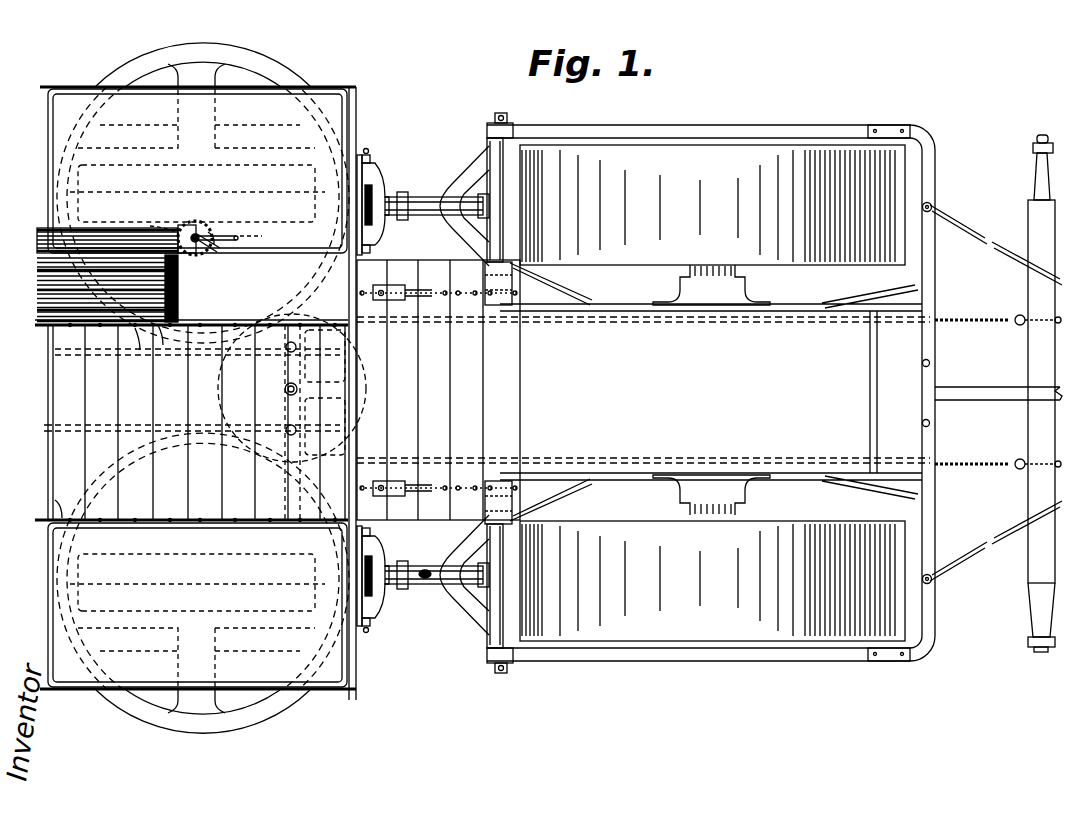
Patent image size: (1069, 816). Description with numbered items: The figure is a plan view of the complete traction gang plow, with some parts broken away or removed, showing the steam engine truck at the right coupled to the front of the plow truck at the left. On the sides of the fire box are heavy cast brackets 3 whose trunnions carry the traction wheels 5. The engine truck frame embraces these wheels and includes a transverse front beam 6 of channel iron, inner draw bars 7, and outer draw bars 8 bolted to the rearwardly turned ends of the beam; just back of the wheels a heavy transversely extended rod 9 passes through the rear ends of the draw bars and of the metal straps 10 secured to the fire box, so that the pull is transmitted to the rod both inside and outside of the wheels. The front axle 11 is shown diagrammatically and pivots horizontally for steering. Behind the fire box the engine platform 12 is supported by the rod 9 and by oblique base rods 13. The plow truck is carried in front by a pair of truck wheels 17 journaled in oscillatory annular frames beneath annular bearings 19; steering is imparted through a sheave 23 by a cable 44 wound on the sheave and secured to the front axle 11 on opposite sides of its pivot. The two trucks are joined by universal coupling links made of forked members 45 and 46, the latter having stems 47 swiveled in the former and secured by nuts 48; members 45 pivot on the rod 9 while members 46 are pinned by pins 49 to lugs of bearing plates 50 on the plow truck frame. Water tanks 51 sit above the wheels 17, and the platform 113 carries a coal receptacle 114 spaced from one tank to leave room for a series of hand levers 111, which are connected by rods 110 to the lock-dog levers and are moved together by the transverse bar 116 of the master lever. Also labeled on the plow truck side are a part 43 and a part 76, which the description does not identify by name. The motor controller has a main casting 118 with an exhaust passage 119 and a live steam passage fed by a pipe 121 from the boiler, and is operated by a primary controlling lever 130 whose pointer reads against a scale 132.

The cast brackets 3 is at (680, 284).
The traction wheels 5 is at (832, 160).
The transverse front beam 6 is at (930, 180).
The inner draw bars 7 is at (797, 304).
The outer draw bars 8 is at (808, 125).
The transversely extended rod 9 is at (495, 116).
The metal straps 10 is at (555, 488).
The front axle 11 is at (1030, 208).
The engine platform 12 is at (643, 390).
The oblique base rods 13 is at (420, 288).
The truck wheels 17 is at (88, 182).
The annular bearings 19 is at (273, 76).
The sheave 23 is at (220, 390).
The guide 43 is at (44, 432).
The cable 44 is at (990, 330).
The forked link members 45 is at (484, 168).
The forked link members 46 is at (385, 186).
The stems 47 is at (425, 568).
The nuts 48 is at (482, 192).
The pins 49 is at (374, 163).
The bearing plates 50 is at (364, 158).
The tanks 51 is at (333, 105).
The bar 76 is at (38, 240).
The rods 110 is at (40, 305).
The hand levers 111 is at (178, 290).
The platform 113 is at (60, 388).
The coal receptacle 114 is at (143, 330).
The transverse bar 116 is at (178, 308).
The main casting 118 is at (205, 232).
The exhaust passage 119 is at (150, 226).
The pipe 121 is at (577, 297).
The primary controlling lever 130 is at (232, 237).
The scale 132 is at (183, 230).